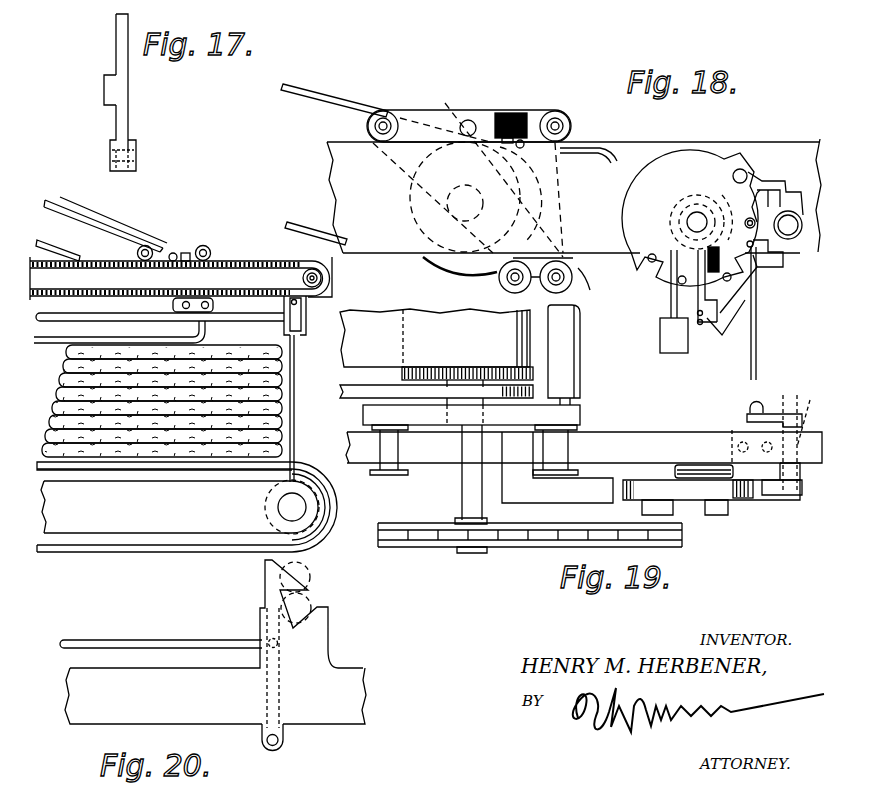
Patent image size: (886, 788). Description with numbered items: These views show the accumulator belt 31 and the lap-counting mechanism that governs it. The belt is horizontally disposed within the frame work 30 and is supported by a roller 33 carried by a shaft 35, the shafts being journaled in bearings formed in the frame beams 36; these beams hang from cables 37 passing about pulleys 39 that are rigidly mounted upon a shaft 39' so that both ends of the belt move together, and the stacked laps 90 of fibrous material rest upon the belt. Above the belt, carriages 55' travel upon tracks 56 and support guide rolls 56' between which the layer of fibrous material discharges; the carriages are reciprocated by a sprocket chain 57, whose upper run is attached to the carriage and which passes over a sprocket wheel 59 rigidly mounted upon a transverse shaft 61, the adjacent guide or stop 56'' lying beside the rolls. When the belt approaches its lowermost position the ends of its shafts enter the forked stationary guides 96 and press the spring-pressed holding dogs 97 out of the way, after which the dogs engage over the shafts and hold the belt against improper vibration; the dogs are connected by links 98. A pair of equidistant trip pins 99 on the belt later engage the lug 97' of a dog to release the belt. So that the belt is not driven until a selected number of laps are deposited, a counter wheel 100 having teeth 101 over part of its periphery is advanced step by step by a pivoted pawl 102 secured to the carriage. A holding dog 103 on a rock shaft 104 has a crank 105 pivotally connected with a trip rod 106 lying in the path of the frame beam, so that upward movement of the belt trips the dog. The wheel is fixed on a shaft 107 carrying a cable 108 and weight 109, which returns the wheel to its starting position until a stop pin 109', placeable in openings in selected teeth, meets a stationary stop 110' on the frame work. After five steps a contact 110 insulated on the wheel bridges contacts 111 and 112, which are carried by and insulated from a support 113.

In FIG. 17, the frame work 30 is at (72, 296).
In FIG. 17, the accumulator belt 31 is at (112, 553).
In FIG. 17, the roller 33 is at (308, 532).
In FIG. 17, the shaft 35 is at (279, 508).
In FIG. 20, the shaft 35 is at (310, 588).
In FIG. 17, the frame beam 36 is at (179, 507).
In FIG. 17, the cable 37 is at (294, 388).
In FIG. 17, the pulley 39 is at (307, 322).
In FIG. 17, the shaft 39' is at (119, 328).
In FIG. 17, the carriage 55' is at (164, 239).
In FIG. 18, the carriage 55' is at (469, 115).
In FIG. 19, the carriage 55' is at (489, 415).
In FIG. 17, the track 56 is at (181, 286).
In FIG. 18, the track 56 is at (574, 184).
In FIG. 19, the track 56 is at (584, 442).
In FIG. 17, the guide roll 56' is at (193, 269).
In FIG. 18, the guide roll 56' is at (498, 277).
In FIG. 18, the guide 56'' is at (596, 289).
In FIG. 17, the sprocket chain 57 is at (235, 261).
In FIG. 17, the sprocket wheel 59 is at (306, 268).
In FIG. 17, the transverse shaft 61 is at (322, 278).
In FIG. 17, the pad 90 is at (284, 427).
In FIG. 20, the stationary guide 96 is at (330, 641).
In FIG. 17, the holding dog 97 is at (137, 92).
In FIG. 20, the holding dog 97 is at (252, 675).
In FIG. 17, the lug 97' is at (90, 90).
In FIG. 20, the link 98 is at (138, 640).
In FIG. 17, the trip pin 99 is at (295, 450).
In FIG. 18, the counter wheel 100 is at (705, 152).
In FIG. 19, the counter wheel 100 is at (643, 487).
In FIG. 18, the teeth 101 is at (757, 183).
In FIG. 19, the teeth 101 is at (744, 499).
In FIG. 18, the pivoted pawl 102 is at (590, 146).
In FIG. 18, the holding dog 103 is at (781, 192).
In FIG. 19, the holding dog 103 is at (784, 497).
In FIG. 18, the rock shaft 104 is at (786, 219).
In FIG. 19, the rock shaft 104 is at (807, 419).
In FIG. 18, the crank 105 is at (785, 255).
In FIG. 19, the crank 105 is at (773, 413).
In FIG. 18, the trip rod 106 is at (757, 353).
In FIG. 19, the trip rod 106 is at (754, 408).
In FIG. 18, the shaft 107 is at (688, 220).
In FIG. 18, the cable 108 is at (670, 307).
In FIG. 19, the cable 108 is at (690, 466).
In FIG. 18, the weight 109 is at (653, 335).
In FIG. 18, the stop pin 109' is at (627, 265).
In FIG. 18, the contact 110 is at (739, 217).
In FIG. 18, the stationary stop 110' is at (762, 163).
In FIG. 18, the contact 111 is at (703, 250).
In FIG. 18, the contact 112 is at (703, 268).
In FIG. 18, the support 113 is at (726, 327).